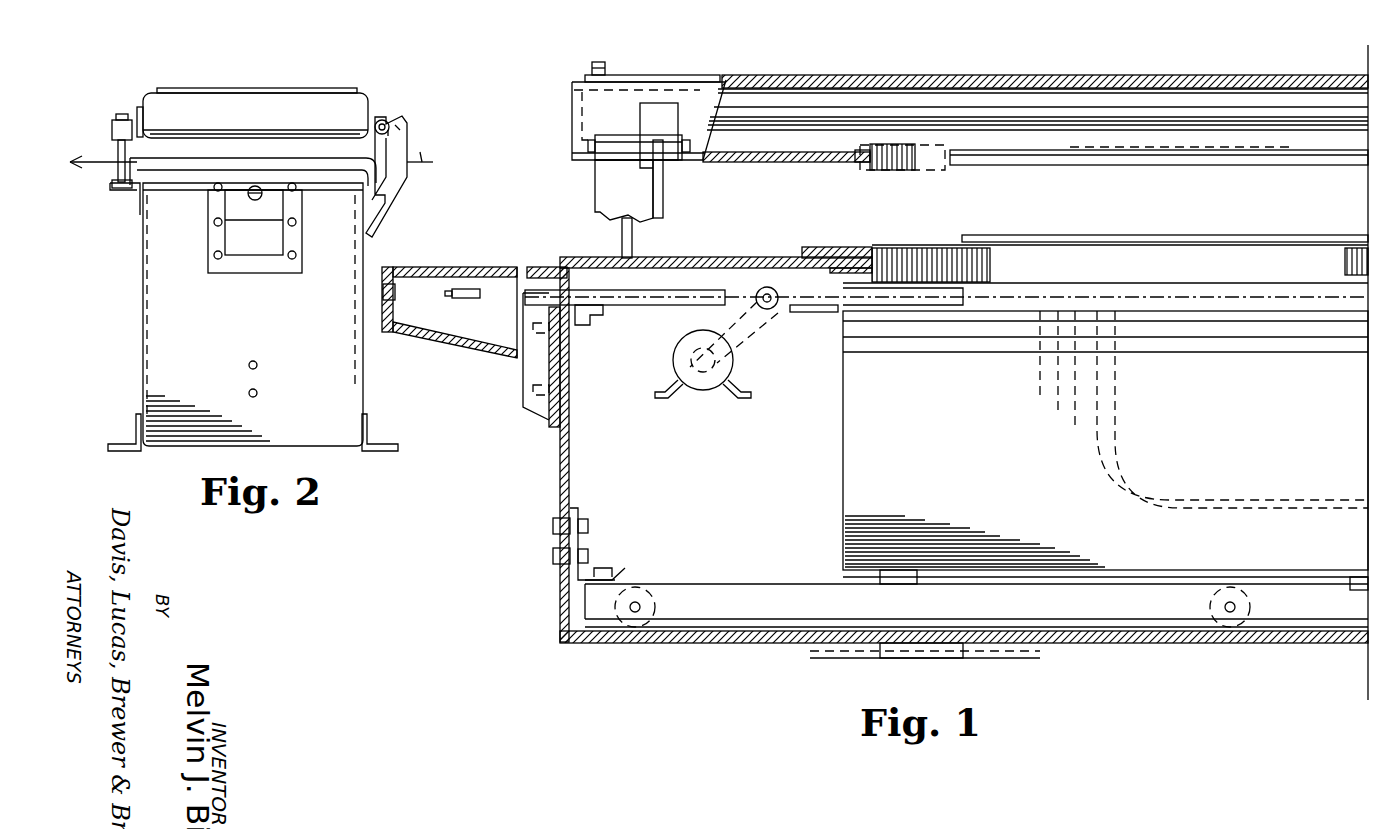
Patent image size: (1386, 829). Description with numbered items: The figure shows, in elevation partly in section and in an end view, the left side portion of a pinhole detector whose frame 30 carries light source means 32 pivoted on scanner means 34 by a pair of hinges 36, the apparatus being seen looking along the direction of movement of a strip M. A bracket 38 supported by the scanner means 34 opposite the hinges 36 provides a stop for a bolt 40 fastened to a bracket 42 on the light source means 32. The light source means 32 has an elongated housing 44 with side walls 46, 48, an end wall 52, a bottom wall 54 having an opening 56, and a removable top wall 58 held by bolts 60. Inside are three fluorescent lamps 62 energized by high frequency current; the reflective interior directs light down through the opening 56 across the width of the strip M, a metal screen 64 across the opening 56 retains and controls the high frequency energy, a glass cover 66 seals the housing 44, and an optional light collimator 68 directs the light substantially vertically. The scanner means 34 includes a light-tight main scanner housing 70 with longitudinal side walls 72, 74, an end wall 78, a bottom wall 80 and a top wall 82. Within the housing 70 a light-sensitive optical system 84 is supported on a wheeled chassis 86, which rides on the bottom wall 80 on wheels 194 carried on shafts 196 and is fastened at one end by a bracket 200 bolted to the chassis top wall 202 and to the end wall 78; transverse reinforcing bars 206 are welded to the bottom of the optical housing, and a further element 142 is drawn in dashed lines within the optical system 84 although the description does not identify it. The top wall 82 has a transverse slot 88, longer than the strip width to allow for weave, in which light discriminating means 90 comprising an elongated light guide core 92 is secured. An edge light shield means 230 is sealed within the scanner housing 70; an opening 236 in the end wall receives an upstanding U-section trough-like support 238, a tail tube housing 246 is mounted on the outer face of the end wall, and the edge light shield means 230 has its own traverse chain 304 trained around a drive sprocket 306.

In FIG. 2, the frame 30 is at (101, 64).
In FIG. 1, the frame 30 is at (512, 46).
In FIG. 2, the light source means 32 is at (309, 83).
In FIG. 1, the light source means 32 is at (900, 70).
In FIG. 2, the scanner means 34 is at (194, 453).
In FIG. 1, the scanner means 34 is at (1167, 652).
In FIG. 2, the hinges 36 is at (384, 120).
In FIG. 1, the hinges 36 is at (597, 177).
In FIG. 2, the bracket 38 is at (137, 205).
In FIG. 2, the bolt 40 is at (116, 150).
In FIG. 1, the bolt 40 is at (620, 236).
In FIG. 2, the bracket 42 is at (136, 110).
In FIG. 1, the elongated housing 44 is at (560, 96).
In FIG. 1, the side wall 46 is at (697, 100).
In FIG. 1, the side wall 48 is at (1172, 102).
In FIG. 1, the end wall 52 is at (620, 119).
In FIG. 1, the bottom wall 54 is at (748, 163).
In FIG. 1, the opening 56 is at (972, 165).
In FIG. 1, the removable top wall 58 is at (798, 80).
In FIG. 1, the bolts 60 is at (596, 62).
In FIG. 1, the fluorescent lamps 62 is at (1015, 112).
In FIG. 1, the metal screen 64 is at (1200, 160).
In FIG. 1, the glass cover 66 is at (1078, 160).
In FIG. 1, the light collimator 68 is at (880, 172).
In FIG. 1, the main scanner housing 70 is at (550, 477).
In FIG. 2, the longitudinal side wall 72 is at (352, 347).
In FIG. 2, the longitudinal side wall 74 is at (150, 344).
In FIG. 1, the longitudinal side wall 74 is at (714, 466).
In FIG. 2, the end wall 78 is at (318, 392).
In FIG. 1, the end wall 78 is at (558, 602).
In FIG. 1, the bottom wall 80 is at (712, 643).
In FIG. 1, the top wall 82 is at (728, 257).
In FIG. 1, the light-sensitive optical system 84 is at (1314, 418).
In FIG. 1, the chassis 86 is at (1108, 612).
In FIG. 1, the slot 88 is at (890, 248).
In FIG. 1, the light discriminating means 90 is at (870, 239).
In FIG. 1, the light guide means 92 is at (945, 248).
In FIG. 1, the conduit 142 is at (1116, 398).
In FIG. 1, the wheels 194 is at (652, 624).
In FIG. 1, the shafts 196 is at (1228, 610).
In FIG. 1, the bracket 200 is at (582, 542).
In FIG. 1, the chassis top wall 202 is at (660, 584).
In FIG. 1, the transverse reinforcing bars 206 is at (920, 580).
In FIG. 1, the edge light shield means 230 is at (578, 260).
In FIG. 1, the opening 236 is at (590, 306).
In FIG. 1, the trough-like support 238 is at (675, 305).
In FIG. 1, the tail tube housing 246 is at (448, 348).
In FIG. 1, the traverse chain 304 is at (790, 312).
In FIG. 1, the drive sprocket 306 is at (768, 312).
In FIG. 2, the strip M is at (251, 150).
In FIG. 1, the strip M is at (1248, 238).